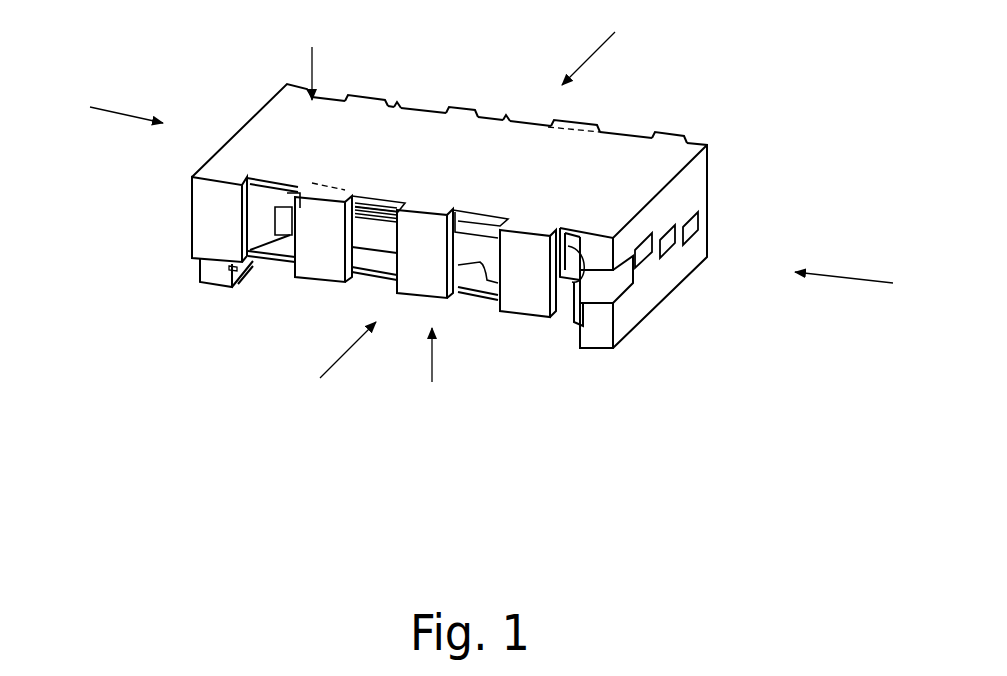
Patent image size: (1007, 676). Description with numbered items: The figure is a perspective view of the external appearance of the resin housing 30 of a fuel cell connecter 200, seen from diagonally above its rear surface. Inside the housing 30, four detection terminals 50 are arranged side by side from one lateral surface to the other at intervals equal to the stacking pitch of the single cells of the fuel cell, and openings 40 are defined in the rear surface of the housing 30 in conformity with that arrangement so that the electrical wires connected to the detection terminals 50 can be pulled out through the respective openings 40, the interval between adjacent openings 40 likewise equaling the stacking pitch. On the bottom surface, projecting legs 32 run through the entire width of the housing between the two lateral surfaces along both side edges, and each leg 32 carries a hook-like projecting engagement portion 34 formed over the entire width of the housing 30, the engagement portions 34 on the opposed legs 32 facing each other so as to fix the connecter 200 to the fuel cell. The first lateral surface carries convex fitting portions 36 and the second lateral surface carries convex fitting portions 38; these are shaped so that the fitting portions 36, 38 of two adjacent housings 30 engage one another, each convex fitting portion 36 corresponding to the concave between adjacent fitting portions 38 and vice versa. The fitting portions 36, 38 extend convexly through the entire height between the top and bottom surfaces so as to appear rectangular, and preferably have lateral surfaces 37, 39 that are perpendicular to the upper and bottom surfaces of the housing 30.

The housing 30 is at (278, 98).
The leg 32 is at (205, 270).
The engagement portion 34 is at (246, 276).
The convex fitting portion 36 is at (210, 177).
The lateral surface of fitting portion 37 is at (387, 278).
The convex fitting portion 38 is at (367, 90).
The lateral surface of fitting portion 39 is at (405, 100).
The opening 40 is at (690, 212).
The detection terminal 50 is at (482, 260).
The connecter 200 is at (450, 519).